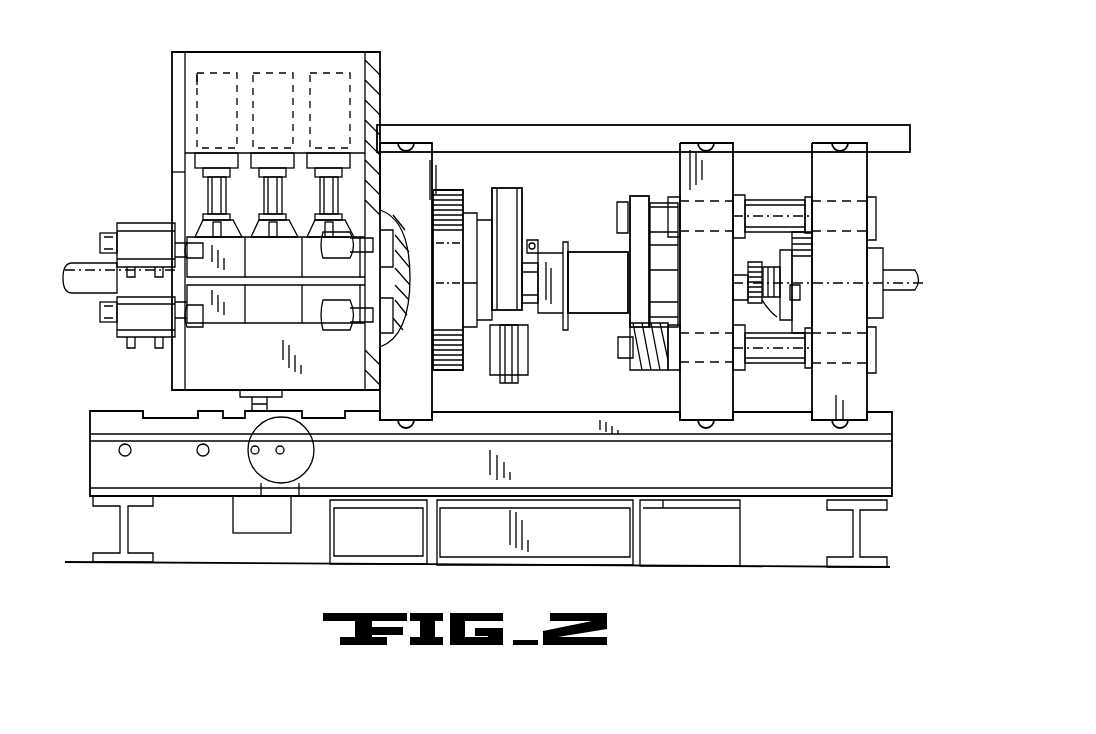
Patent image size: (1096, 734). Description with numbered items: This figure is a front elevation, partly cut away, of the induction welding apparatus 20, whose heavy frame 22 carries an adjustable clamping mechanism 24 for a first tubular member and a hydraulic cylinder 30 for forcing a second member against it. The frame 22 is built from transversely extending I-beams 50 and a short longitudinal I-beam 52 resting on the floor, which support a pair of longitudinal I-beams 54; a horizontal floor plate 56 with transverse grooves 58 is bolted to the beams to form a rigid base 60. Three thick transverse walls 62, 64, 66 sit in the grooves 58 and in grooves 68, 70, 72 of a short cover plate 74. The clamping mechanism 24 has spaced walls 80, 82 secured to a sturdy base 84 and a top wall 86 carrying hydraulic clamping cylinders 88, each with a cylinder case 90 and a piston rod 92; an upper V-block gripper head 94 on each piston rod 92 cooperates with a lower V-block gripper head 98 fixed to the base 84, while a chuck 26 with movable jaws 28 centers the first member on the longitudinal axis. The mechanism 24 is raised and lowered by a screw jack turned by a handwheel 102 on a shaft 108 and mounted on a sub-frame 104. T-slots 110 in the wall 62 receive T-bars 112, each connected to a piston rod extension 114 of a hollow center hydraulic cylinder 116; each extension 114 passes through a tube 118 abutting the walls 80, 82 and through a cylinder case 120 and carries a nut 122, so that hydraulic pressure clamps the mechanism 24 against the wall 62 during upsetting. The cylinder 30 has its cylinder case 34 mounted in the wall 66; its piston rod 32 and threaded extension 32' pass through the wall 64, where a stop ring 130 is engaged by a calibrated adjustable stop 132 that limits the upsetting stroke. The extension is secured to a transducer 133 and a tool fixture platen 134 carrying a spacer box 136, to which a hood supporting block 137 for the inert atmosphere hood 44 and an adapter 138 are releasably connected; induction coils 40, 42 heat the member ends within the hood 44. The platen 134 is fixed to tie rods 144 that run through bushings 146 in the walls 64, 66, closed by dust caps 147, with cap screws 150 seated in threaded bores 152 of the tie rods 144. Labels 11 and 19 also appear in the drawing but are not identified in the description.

The rod 11 is at (63, 280).
The nut 19 is at (100, 240).
The induction welding apparatus 20 is at (626, 76).
The frame 22 is at (898, 443).
The clamping mechanism 24 is at (188, 148).
The chuck 26 is at (449, 187).
The movable jaws 28 is at (474, 280).
The hydraulic cylinder 30 is at (800, 259).
The piston rod 32 is at (791, 280).
The threaded extension 32' is at (809, 316).
The cylinder case 34 is at (803, 295).
The induction coil 40 is at (498, 380).
The induction coil 42 is at (513, 380).
The inert atmosphere hood 44 is at (527, 185).
The transversely extending I-beams 50 is at (126, 528).
The longitudinally extending I-beam 52 is at (396, 543).
The longitudinally extending I-beams 54 is at (620, 479).
The floor plate 56 is at (475, 441).
The transverse grooves 58 is at (230, 413).
The rigid base 60 is at (88, 420).
The transverse wall 62 is at (417, 397).
The transverse wall 64 is at (723, 400).
The transverse wall 66 is at (863, 390).
The groove 68 is at (412, 145).
The groove 70 is at (706, 145).
The groove 72 is at (846, 145).
The cover plate 74 is at (776, 127).
The wall 80 is at (172, 63).
The wall 82 is at (380, 56).
The base 84 is at (235, 377).
The top wall 86 is at (213, 50).
The hydraulic clamping cylinders 88 is at (315, 70).
The cylinder case 90 is at (197, 88).
The piston rod 92 is at (262, 198).
The upper V-block gripper head 94 is at (292, 271).
The lower V-block gripper head 98 is at (292, 317).
The handwheel 102 is at (299, 470).
The sub-frame 104 is at (278, 534).
The shaft 108 is at (275, 454).
The T-slots 110 is at (392, 216).
The T-bars 112 is at (378, 336).
The piston rod extension 114 is at (358, 262).
The hollow center hydraulic cylinder 116 is at (117, 225).
The tube 118 is at (198, 250).
The cylinder case 120 is at (166, 257).
The nut 122 is at (110, 322).
The stop ring 130 is at (742, 258).
The calibrated adjustable stop 132 is at (748, 300).
The transducer 133 is at (747, 272).
The tool fixture platen 134 is at (638, 197).
The spacer box 136 is at (627, 288).
The inert atmosphere hood supporting block 137 is at (556, 254).
The adapter 138 is at (530, 303).
The tie rods 144 is at (767, 209).
The bushings 146 is at (672, 196).
The dust cap 147 is at (873, 205).
The cap screws 150 is at (623, 208).
The threaded bores 152 is at (653, 372).